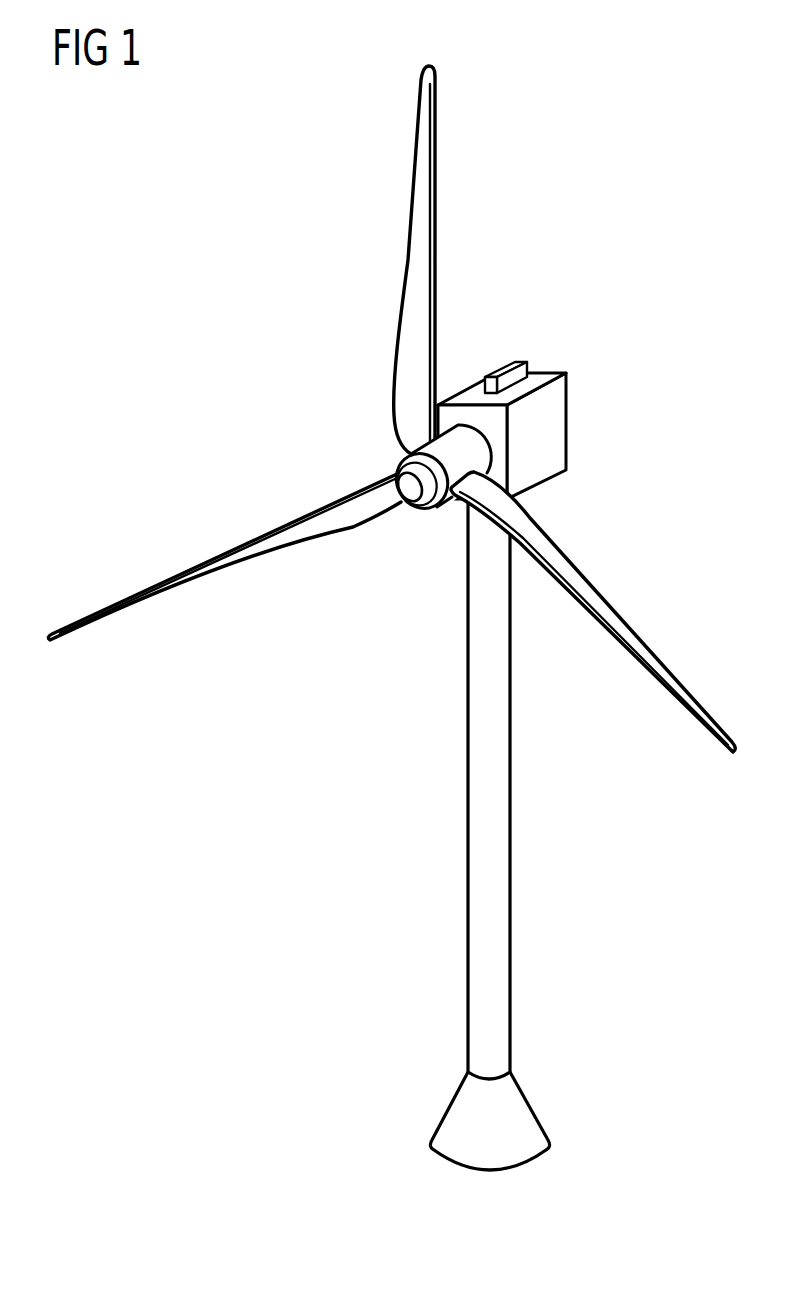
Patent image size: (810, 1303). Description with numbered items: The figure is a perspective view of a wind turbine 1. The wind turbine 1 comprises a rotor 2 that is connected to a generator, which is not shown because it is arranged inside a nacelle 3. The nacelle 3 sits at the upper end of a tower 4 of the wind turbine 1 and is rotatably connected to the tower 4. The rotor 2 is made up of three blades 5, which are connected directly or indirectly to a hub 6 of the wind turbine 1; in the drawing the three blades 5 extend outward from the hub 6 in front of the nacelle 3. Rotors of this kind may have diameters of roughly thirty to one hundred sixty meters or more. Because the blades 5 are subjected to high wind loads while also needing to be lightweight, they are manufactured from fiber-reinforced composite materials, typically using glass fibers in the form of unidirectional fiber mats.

The wind turbine 1 is at (106, 204).
The rotor 2 is at (192, 536).
The nacelle 3 is at (555, 432).
The tower 4 is at (497, 843).
The blades 5 is at (413, 277).
The hub 6 is at (473, 457).